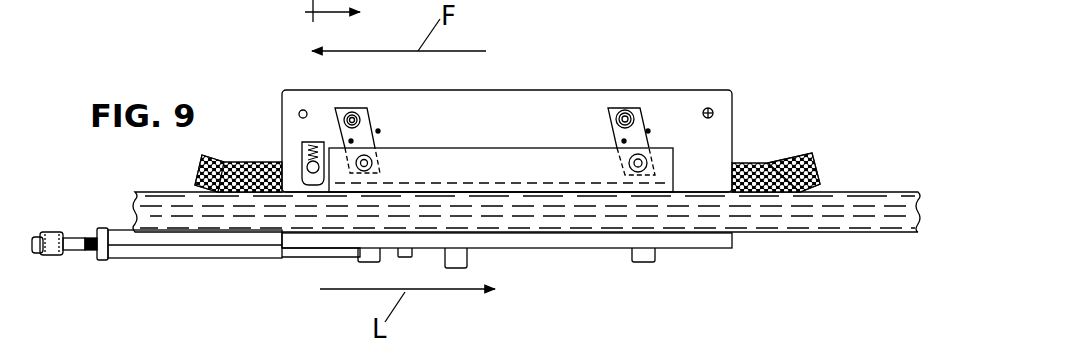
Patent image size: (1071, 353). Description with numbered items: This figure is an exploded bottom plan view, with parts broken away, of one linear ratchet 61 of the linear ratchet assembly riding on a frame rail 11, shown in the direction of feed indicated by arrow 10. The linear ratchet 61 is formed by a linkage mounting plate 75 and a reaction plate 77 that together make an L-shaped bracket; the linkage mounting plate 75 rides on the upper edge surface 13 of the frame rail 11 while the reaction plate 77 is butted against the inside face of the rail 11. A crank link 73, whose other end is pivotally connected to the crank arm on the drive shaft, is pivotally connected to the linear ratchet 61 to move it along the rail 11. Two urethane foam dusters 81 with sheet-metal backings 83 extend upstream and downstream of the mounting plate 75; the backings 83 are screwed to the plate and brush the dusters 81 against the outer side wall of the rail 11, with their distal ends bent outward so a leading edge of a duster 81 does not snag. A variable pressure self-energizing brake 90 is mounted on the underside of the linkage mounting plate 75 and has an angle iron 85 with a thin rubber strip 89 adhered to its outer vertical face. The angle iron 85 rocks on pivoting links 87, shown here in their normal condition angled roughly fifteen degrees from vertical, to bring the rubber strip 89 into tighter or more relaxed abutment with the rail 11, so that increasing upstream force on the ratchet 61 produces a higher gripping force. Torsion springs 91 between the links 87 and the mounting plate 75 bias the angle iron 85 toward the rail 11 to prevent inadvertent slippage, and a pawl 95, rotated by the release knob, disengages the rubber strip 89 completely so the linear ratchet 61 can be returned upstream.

The feed direction arrow 10 is at (350, 15).
The frame rail 11 is at (865, 235).
The upper edge surface 13 is at (838, 212).
The linear ratchet 61 is at (868, 97).
The crank link 73 is at (153, 258).
The linkage mounting plate 75 is at (558, 90).
The reaction plate 77 is at (690, 248).
The urethane foam duster 81 is at (202, 167).
The sheet-metal backing 83 is at (250, 163).
The angle iron 85 is at (516, 148).
The pivoting link 87 is at (378, 140).
The rubber strip 89 is at (537, 192).
The variable pressure self-energizing brake 90 is at (470, 128).
The torsion spring 91 is at (378, 130).
The pawl 95 is at (300, 150).